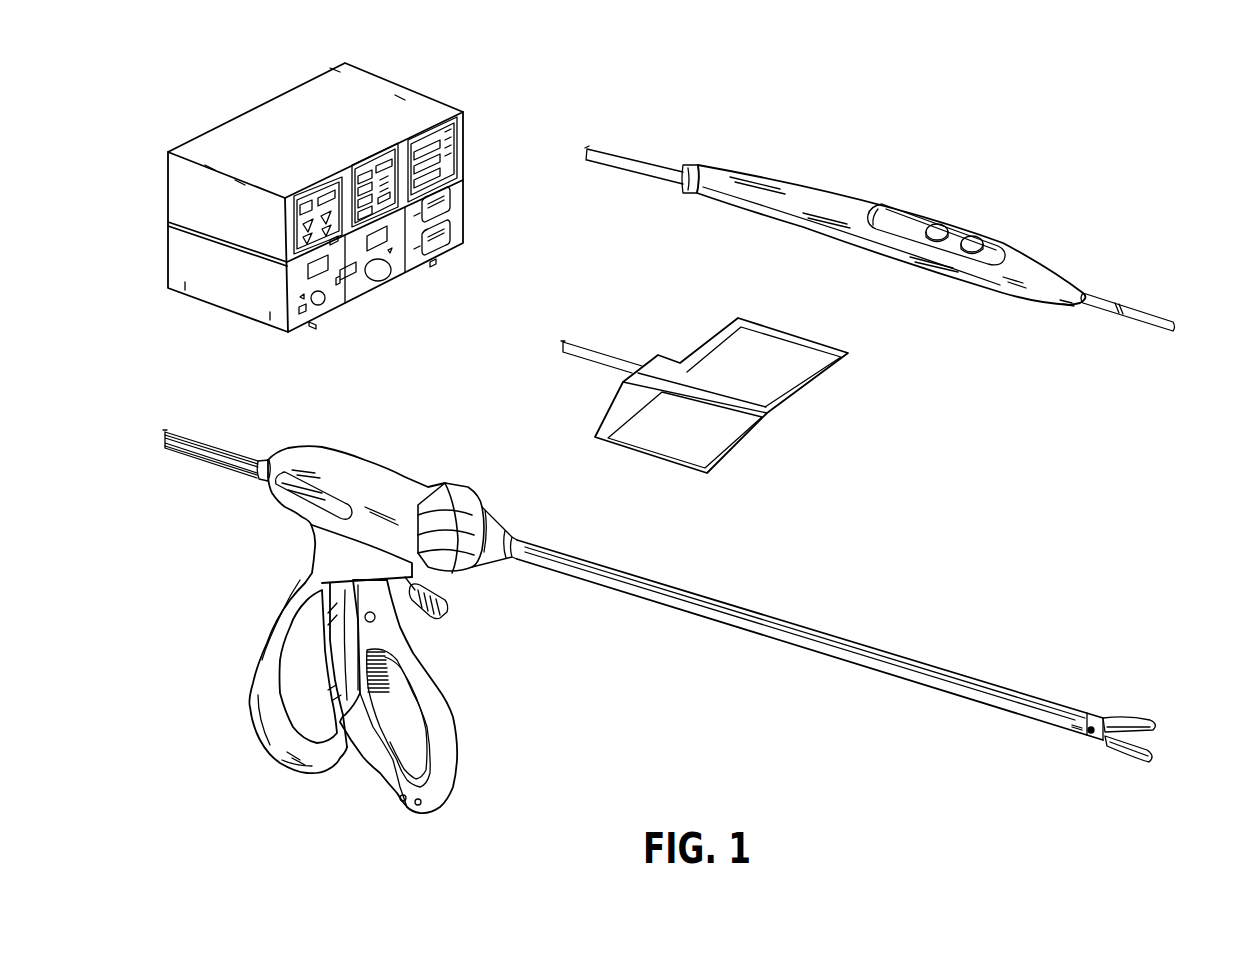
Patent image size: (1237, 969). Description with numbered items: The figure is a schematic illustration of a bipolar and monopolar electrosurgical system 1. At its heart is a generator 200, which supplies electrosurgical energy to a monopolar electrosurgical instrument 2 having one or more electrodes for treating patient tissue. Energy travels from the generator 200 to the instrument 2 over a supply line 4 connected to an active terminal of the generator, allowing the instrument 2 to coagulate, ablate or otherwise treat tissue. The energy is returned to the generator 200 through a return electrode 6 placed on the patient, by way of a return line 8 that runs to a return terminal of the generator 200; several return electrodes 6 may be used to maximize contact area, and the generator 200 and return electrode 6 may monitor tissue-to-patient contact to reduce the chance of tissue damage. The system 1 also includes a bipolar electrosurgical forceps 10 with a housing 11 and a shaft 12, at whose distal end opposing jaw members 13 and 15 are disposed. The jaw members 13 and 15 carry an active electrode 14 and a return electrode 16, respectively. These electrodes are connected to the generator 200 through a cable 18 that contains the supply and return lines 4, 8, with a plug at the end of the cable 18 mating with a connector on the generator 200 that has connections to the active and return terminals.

The electrosurgical system 1 is at (928, 215).
The monopolar electrosurgical instrument 2 is at (1015, 258).
The supply line 4 is at (632, 153).
The return electrode 6 is at (640, 457).
The return line 8 is at (593, 347).
The bipolar electrosurgical forceps 10 is at (689, 615).
The housing 11 is at (373, 462).
The shaft 12 is at (805, 628).
The jaw member 13 is at (1140, 720).
The active electrode 14 is at (1147, 731).
The jaw member 15 is at (1137, 762).
The return electrode 16 is at (1147, 750).
The cable 18 is at (233, 447).
The generator 200 is at (249, 92).